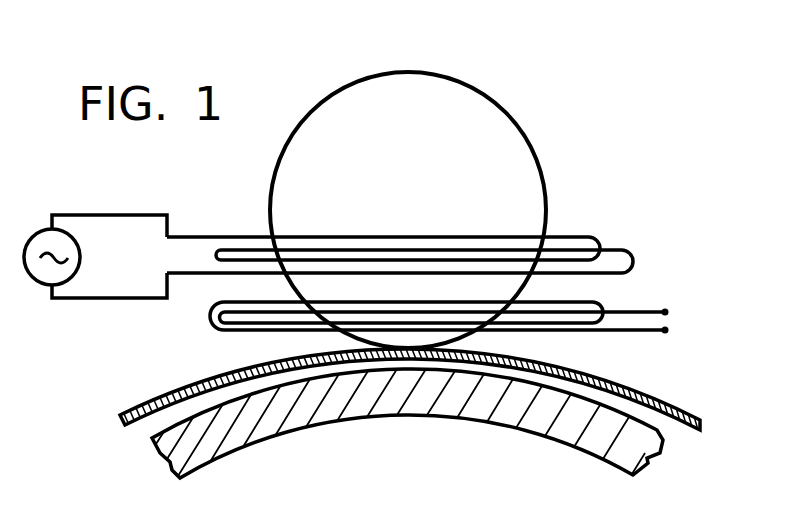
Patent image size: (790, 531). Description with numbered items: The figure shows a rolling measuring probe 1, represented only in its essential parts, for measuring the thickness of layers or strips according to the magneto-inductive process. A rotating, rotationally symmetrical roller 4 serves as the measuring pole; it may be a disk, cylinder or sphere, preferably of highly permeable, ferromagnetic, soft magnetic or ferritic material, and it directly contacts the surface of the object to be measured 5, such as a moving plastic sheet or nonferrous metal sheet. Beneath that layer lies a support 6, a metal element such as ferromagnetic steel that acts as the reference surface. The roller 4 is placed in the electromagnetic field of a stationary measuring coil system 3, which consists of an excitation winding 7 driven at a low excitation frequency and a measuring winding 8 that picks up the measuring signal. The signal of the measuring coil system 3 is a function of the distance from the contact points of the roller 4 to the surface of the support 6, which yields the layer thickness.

The measuring probe 1 is at (487, 80).
The measuring coil system 3 is at (684, 226).
The roller 4 is at (540, 155).
The object to be measured 5 is at (673, 402).
The support 6 is at (647, 455).
The excitation winding 7 is at (620, 247).
The measuring winding 8 is at (615, 300).